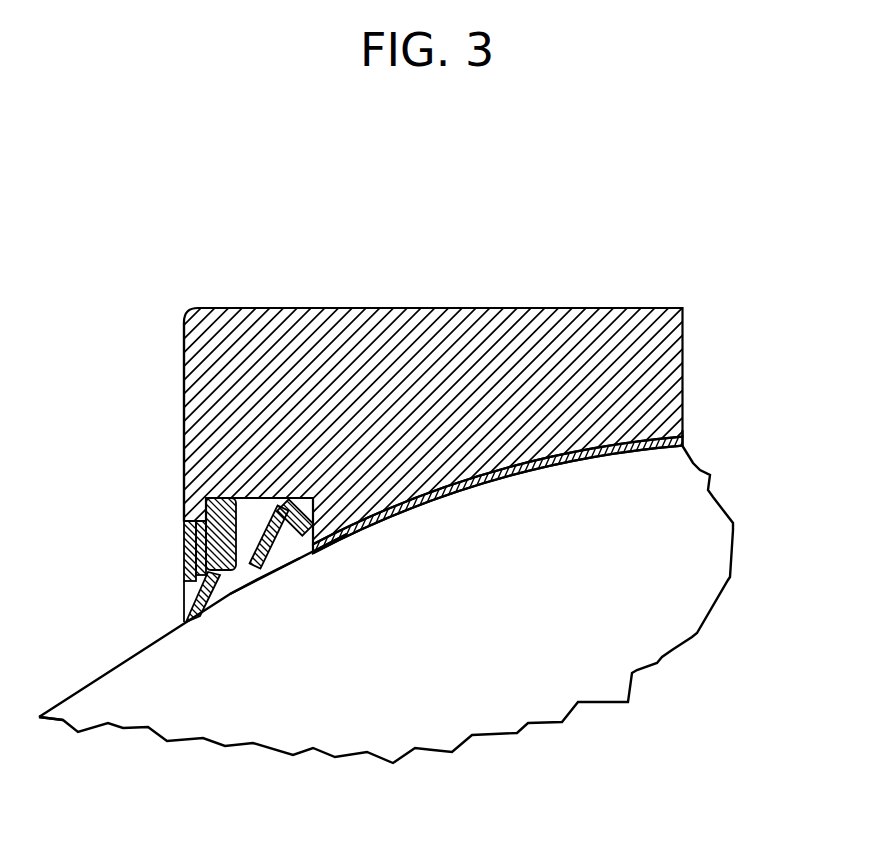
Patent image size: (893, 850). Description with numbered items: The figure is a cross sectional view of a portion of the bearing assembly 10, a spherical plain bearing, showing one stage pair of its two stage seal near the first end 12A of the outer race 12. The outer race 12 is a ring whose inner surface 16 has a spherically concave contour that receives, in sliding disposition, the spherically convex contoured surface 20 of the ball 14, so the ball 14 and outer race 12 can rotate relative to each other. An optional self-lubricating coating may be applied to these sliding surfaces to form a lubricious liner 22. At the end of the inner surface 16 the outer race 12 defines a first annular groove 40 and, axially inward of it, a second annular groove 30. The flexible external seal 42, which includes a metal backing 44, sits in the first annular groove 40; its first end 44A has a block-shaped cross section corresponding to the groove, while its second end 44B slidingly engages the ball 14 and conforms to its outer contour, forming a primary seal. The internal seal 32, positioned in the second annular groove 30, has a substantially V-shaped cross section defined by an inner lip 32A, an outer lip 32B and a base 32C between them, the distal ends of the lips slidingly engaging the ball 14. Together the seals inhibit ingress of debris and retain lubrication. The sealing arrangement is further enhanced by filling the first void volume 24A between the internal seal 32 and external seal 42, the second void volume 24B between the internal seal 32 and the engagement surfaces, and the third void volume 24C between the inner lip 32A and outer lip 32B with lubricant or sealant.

The bearing assembly 10 is at (115, 742).
The outer race 12 is at (448, 308).
The first end 12A is at (160, 355).
The ball 14 is at (247, 712).
The inner surface 16 is at (690, 452).
The spherically convex contoured surface 20 is at (640, 450).
The lubricious liner 22 is at (483, 480).
The first void volume 24A is at (237, 578).
The second void volume 24B is at (337, 550).
The third void volume 24C is at (281, 564).
The second annular groove 30 is at (285, 499).
The internal seal 32 is at (275, 507).
The inner lip 32A is at (306, 562).
The outer lip 32B is at (270, 586).
The base 32C is at (310, 488).
The first annular groove 40 is at (236, 500).
The flexible external seal 42 is at (186, 548).
The metal backing 44 is at (180, 576).
The first end 44A is at (176, 519).
The second end 44B is at (177, 612).